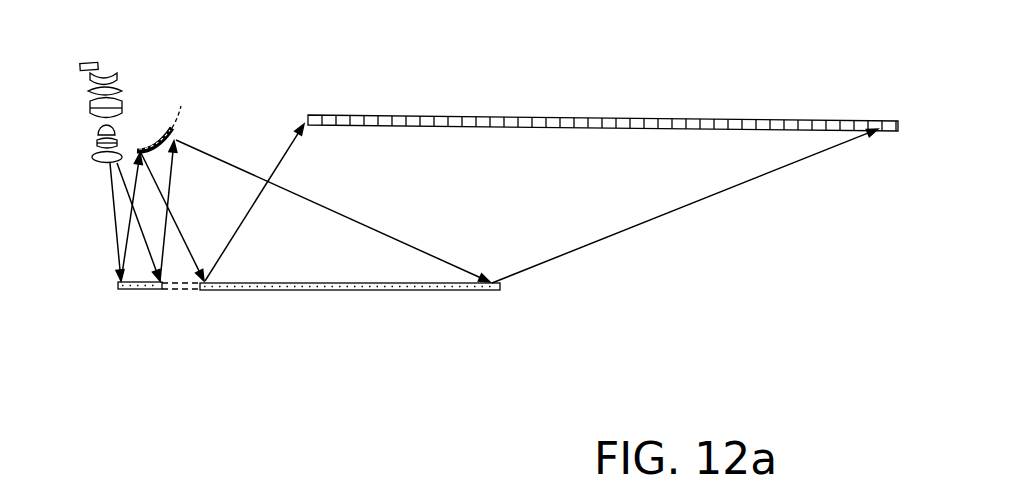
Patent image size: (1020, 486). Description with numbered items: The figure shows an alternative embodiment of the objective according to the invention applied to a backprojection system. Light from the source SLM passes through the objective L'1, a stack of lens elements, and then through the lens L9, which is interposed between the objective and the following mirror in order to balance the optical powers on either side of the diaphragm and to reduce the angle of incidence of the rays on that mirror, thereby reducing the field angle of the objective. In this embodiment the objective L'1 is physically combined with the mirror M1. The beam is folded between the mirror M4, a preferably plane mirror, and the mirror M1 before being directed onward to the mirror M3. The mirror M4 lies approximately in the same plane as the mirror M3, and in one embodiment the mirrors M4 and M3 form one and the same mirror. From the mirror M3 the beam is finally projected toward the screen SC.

The spatial light modulator SLM is at (98, 65).
The objective L'1 is at (81, 115).
The lens L9 is at (108, 164).
The mirror M1 is at (177, 126).
The mirror M3 is at (350, 300).
The plane mirror M4 is at (155, 300).
The screen SC is at (603, 111).